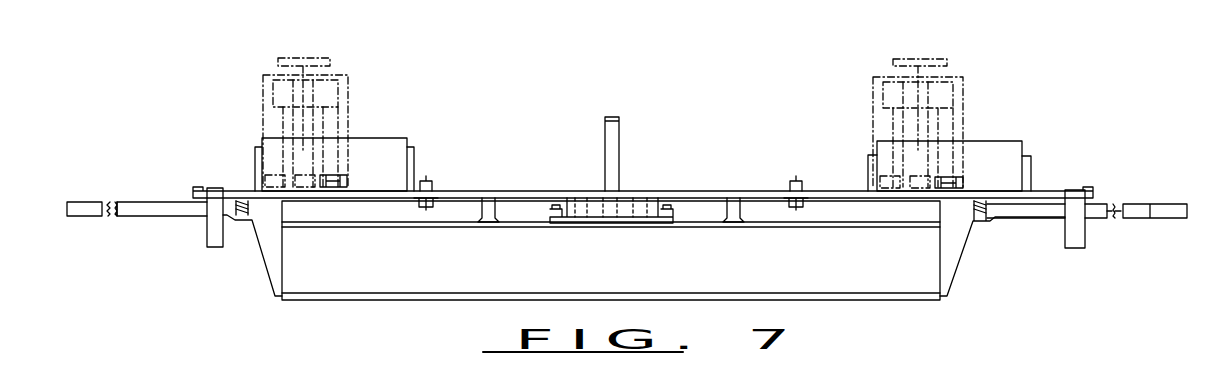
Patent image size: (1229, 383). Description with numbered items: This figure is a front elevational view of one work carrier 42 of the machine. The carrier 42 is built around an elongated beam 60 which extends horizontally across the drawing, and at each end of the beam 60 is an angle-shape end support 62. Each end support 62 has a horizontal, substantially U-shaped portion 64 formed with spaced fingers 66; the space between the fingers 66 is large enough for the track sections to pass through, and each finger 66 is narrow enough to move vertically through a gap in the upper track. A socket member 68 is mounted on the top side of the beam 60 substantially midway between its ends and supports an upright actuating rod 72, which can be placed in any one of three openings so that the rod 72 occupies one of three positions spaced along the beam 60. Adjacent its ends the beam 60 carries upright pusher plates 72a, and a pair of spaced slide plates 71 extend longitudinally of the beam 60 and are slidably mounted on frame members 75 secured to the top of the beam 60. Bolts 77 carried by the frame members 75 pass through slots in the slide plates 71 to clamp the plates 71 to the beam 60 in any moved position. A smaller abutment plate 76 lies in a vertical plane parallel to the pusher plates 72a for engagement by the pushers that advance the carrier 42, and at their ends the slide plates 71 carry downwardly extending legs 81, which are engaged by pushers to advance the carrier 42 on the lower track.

The work carrier 42 is at (1085, 173).
The elongated beam 60 is at (902, 282).
The angle-shape end support 62 is at (268, 237).
The U-shaped portion 64 is at (148, 200).
The finger 66 is at (82, 201).
The socket member 68 is at (627, 208).
The slide plate 71 is at (680, 192).
The actuating rod 72 is at (615, 138).
The pusher plate 72a is at (383, 147).
The frame member 75 is at (452, 198).
The abutment plate 76 is at (342, 184).
The bolt 77 is at (798, 187).
The leg 81 is at (205, 237).